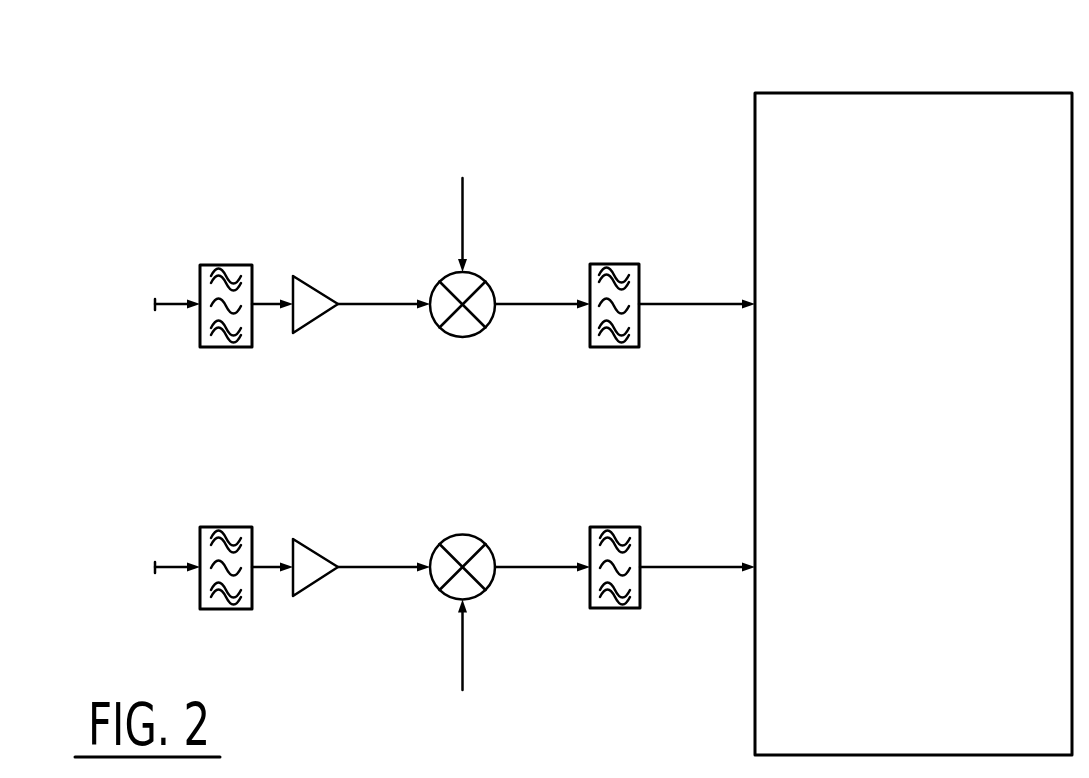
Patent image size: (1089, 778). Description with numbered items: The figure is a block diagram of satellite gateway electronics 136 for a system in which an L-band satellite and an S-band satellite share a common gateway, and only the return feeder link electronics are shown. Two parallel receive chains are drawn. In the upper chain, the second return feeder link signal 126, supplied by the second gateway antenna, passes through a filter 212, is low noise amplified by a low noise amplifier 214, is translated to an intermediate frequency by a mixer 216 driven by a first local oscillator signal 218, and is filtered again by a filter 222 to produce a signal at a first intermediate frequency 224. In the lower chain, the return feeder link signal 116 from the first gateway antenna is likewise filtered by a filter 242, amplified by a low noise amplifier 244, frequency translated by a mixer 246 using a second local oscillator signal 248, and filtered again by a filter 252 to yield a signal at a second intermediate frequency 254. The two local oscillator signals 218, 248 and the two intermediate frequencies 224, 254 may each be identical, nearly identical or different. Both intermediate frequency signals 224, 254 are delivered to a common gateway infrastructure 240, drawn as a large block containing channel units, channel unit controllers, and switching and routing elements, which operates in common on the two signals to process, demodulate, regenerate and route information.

The satellite gateway electronics 136 is at (341, 57).
The second return feeder link signal 126 is at (172, 303).
The filter 212 is at (225, 264).
The low noise amplifier 214 is at (323, 291).
The mixer 216 is at (487, 286).
The first local oscillator signal 218 is at (461, 218).
The filter 222 is at (612, 263).
The first intermediate frequency signal 224 is at (682, 302).
The common gateway infrastructure 240 is at (753, 165).
The return feeder link signal 116 is at (172, 566).
The filter 242 is at (225, 526).
The low noise amplifier 244 is at (323, 554).
The mixer 246 is at (488, 548).
The second local oscillator signal 248 is at (460, 660).
The filter 252 is at (613, 526).
The second intermediate frequency signal 254 is at (682, 566).